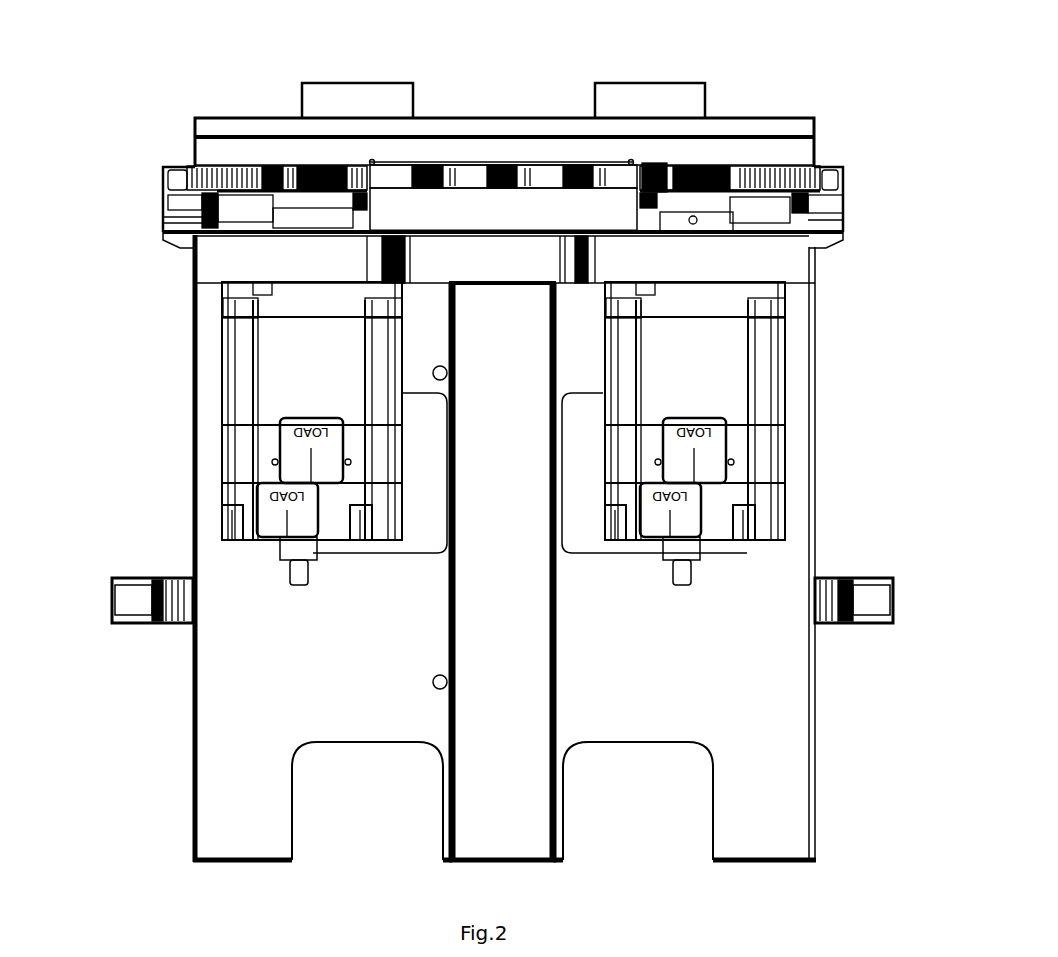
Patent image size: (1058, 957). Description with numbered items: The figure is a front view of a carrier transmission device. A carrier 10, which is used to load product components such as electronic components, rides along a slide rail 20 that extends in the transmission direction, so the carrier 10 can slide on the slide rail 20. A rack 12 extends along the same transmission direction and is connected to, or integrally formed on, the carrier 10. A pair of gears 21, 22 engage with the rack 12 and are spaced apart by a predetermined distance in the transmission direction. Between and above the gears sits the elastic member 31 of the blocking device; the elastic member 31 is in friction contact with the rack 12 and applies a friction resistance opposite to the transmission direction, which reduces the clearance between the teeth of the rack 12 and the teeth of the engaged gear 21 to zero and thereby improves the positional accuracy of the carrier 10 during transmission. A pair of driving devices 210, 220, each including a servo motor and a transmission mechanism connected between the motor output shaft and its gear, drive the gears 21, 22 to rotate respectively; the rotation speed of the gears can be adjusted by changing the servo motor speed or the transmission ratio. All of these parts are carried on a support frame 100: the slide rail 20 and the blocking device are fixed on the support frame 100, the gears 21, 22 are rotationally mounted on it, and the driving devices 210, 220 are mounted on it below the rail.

The carrier 10 is at (822, 205).
The rack 12 is at (227, 167).
The slide rail 20 is at (167, 220).
The gear 21 is at (270, 160).
The gear 22 is at (712, 160).
The elastic member 31 is at (468, 177).
The support frame 100 is at (213, 260).
The driving device 210 is at (280, 400).
The driving device 220 is at (720, 373).